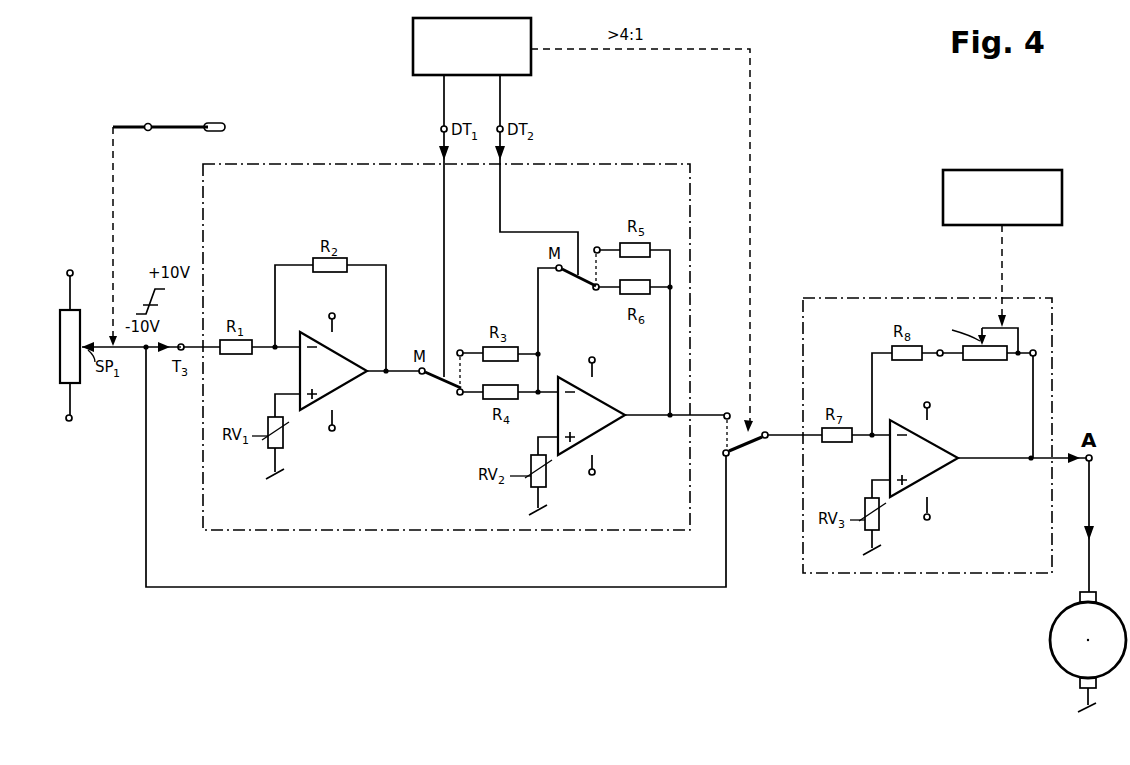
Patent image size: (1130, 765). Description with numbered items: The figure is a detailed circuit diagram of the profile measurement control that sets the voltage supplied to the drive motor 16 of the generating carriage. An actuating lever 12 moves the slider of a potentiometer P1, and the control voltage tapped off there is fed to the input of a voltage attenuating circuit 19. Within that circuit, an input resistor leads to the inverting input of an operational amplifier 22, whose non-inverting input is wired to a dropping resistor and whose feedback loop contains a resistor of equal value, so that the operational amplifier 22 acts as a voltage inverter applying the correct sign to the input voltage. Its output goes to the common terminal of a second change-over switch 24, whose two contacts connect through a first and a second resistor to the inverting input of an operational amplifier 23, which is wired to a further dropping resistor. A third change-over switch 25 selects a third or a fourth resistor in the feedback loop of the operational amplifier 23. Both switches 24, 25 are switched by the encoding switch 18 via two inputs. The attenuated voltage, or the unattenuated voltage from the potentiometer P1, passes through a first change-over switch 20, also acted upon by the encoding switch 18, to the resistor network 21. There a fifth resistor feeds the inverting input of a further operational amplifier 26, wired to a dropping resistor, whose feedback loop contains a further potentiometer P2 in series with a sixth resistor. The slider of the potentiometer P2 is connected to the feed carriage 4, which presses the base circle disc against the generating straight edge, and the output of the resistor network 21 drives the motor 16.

The feed carriage 4 is at (943, 196).
The actuating lever 12 is at (215, 122).
The drive motor 16 is at (1052, 633).
The encoding switch 18 is at (413, 44).
The voltage attenuating circuit 19 is at (290, 176).
The first change-over switch 20 is at (756, 447).
The resistor network 21 is at (828, 312).
The operational amplifier 22 is at (298, 372).
The operational amplifier 23 is at (598, 425).
The second change-over switch 24 is at (436, 387).
The third change-over switch 25 is at (573, 281).
The further operational amplifier 26 is at (944, 473).
The potentiometer P1 is at (65, 325).
The further potentiometer P2 is at (990, 361).